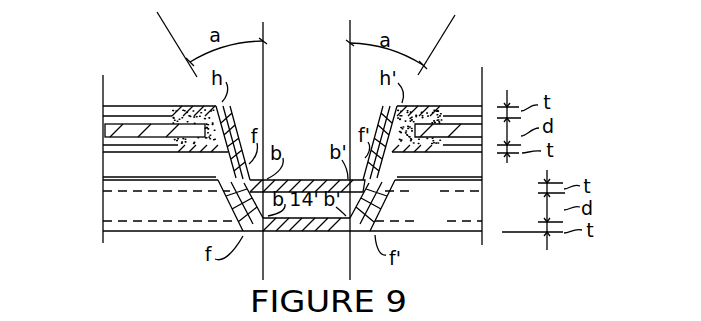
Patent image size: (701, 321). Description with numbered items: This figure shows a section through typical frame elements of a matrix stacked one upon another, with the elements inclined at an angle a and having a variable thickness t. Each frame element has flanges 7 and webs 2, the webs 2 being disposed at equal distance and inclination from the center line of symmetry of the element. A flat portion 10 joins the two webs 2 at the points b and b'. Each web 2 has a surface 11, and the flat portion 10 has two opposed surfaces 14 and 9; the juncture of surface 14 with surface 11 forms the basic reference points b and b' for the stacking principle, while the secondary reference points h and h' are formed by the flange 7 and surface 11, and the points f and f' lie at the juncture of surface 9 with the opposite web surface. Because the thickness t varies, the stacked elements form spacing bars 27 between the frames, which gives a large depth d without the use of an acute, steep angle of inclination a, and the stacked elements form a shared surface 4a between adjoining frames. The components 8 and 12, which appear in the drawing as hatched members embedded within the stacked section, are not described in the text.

The web 2 is at (231, 124).
The shared surface 4a is at (220, 196).
The flange 7 is at (179, 111).
The embedded conductor 8 is at (142, 130).
The surface of flat portion 9 is at (295, 232).
The flat portion 10 is at (321, 190).
The surface of web 11 is at (264, 110).
The embedded conductor 12 is at (436, 120).
The surface of flat portion 14 is at (287, 189).
The spacing bar 27 is at (222, 161).